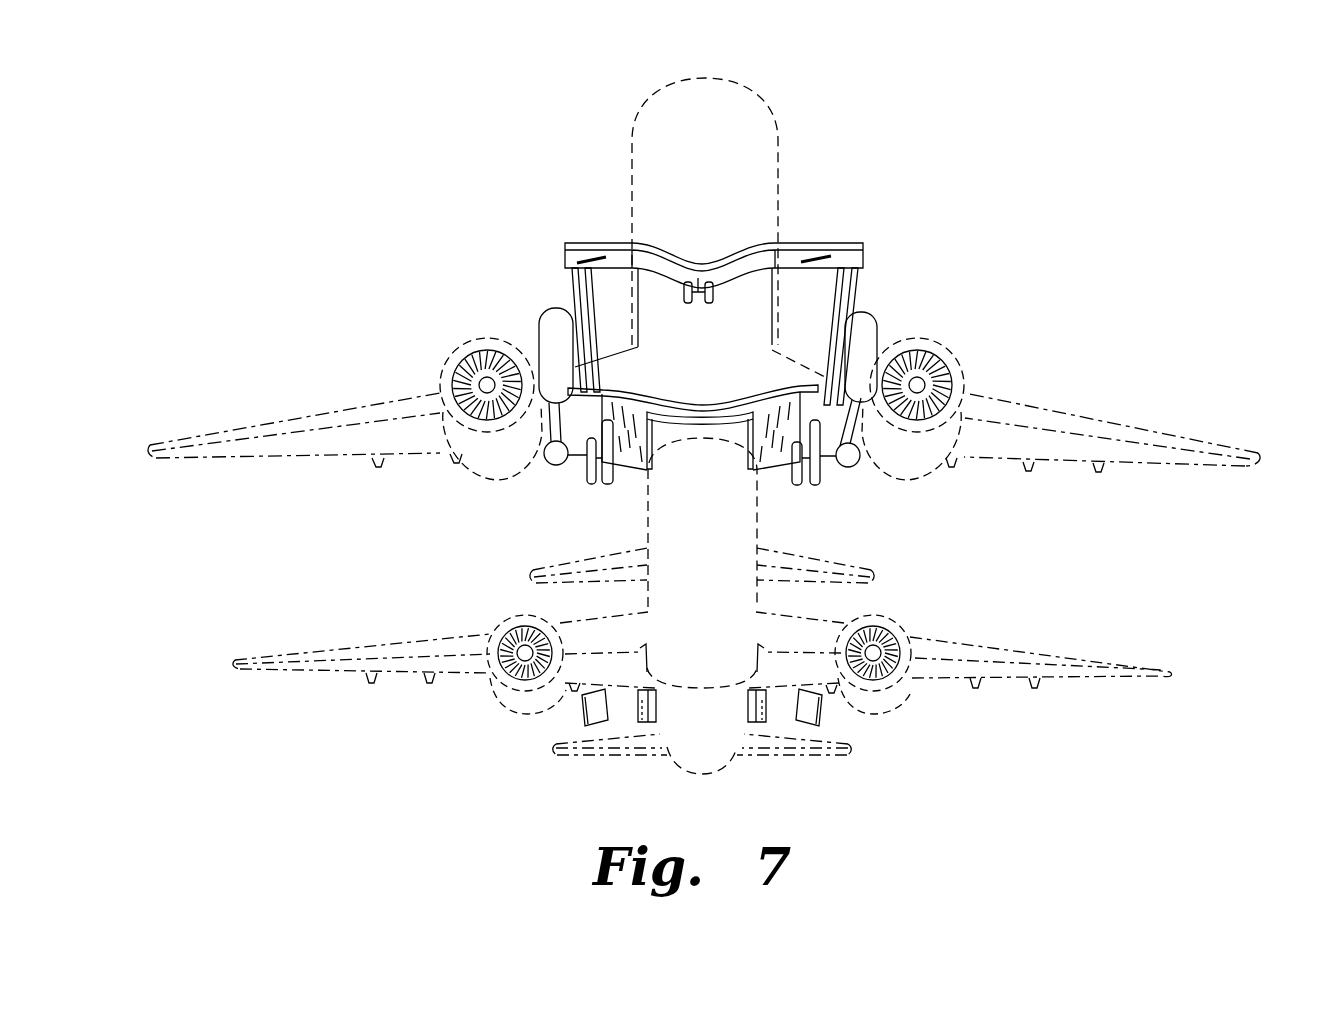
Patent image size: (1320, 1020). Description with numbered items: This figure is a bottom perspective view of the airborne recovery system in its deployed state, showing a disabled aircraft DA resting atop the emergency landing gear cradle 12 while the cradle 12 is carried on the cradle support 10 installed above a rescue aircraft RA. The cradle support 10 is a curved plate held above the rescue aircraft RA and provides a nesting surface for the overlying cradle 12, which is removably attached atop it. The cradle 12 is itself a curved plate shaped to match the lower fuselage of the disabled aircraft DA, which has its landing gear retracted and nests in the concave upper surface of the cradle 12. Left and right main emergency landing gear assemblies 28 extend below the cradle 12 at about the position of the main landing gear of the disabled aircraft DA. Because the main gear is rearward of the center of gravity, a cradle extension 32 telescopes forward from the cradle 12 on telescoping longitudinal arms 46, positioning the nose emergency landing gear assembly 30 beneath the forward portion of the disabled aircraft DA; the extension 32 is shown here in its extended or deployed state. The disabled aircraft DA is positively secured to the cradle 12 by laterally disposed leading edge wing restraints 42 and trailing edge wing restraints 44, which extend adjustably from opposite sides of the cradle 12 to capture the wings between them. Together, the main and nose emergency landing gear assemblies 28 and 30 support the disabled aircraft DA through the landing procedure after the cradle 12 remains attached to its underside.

The disabled aircraft DA is at (656, 110).
The rescue aircraft RA is at (515, 706).
The cradle support 10 is at (642, 470).
The emergency landing gear cradle 12 is at (700, 405).
The main emergency landing gear assemblies 28 is at (590, 485).
The nose emergency landing gear assembly 30 is at (699, 280).
The cradle extension 32 is at (805, 245).
The leading edge wing restraints 42 is at (540, 338).
The trailing edge wing restraints 44 is at (545, 466).
The telescoping arms 46 is at (590, 292).